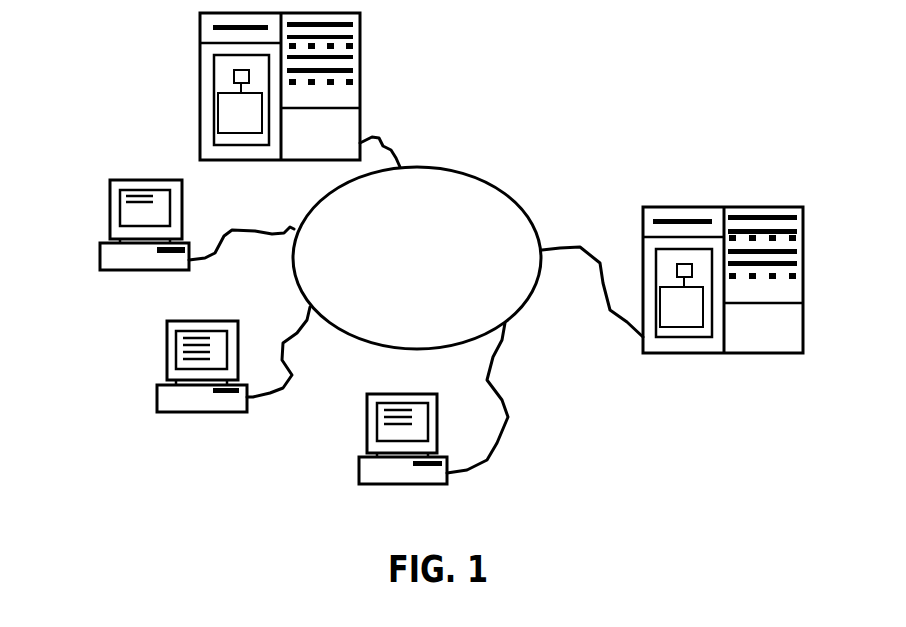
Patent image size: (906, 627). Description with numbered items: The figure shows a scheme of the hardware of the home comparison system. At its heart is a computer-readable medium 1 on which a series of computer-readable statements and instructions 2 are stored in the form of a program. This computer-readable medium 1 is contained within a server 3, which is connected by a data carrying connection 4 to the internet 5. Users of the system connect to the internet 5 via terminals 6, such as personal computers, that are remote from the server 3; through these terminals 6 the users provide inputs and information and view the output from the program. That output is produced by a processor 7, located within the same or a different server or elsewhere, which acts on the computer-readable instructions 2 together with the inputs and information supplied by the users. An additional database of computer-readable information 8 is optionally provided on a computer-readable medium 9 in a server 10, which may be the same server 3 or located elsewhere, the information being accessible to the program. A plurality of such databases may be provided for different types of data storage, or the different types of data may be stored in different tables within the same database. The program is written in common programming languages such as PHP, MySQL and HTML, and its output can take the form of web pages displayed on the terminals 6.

The computer-readable medium 1 is at (230, 135).
The computer-readable statements and instructions 2 is at (230, 113).
The server 3 is at (200, 88).
The data carrying connection 4 is at (385, 140).
The internet 5 is at (513, 195).
The terminals 6 is at (200, 412).
The processor 7 is at (235, 70).
The database of computer-readable information 8 is at (688, 318).
The computer-readable medium 9 is at (670, 328).
The server 10 is at (762, 352).